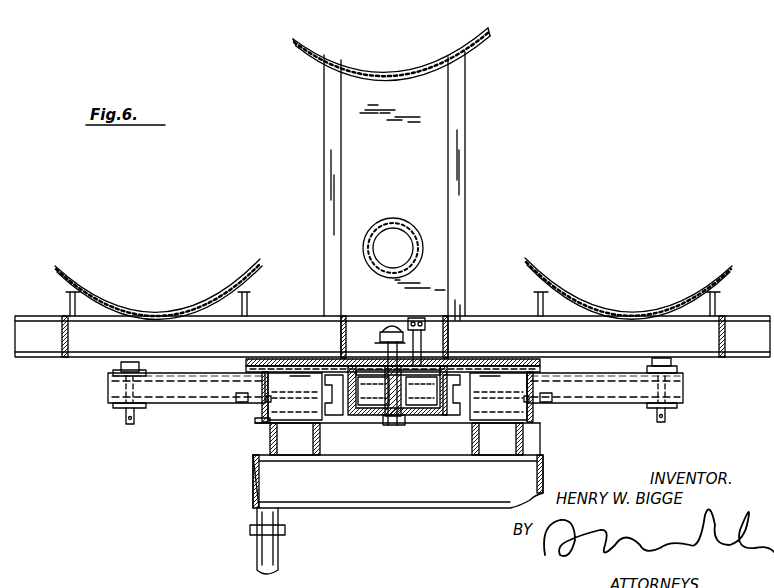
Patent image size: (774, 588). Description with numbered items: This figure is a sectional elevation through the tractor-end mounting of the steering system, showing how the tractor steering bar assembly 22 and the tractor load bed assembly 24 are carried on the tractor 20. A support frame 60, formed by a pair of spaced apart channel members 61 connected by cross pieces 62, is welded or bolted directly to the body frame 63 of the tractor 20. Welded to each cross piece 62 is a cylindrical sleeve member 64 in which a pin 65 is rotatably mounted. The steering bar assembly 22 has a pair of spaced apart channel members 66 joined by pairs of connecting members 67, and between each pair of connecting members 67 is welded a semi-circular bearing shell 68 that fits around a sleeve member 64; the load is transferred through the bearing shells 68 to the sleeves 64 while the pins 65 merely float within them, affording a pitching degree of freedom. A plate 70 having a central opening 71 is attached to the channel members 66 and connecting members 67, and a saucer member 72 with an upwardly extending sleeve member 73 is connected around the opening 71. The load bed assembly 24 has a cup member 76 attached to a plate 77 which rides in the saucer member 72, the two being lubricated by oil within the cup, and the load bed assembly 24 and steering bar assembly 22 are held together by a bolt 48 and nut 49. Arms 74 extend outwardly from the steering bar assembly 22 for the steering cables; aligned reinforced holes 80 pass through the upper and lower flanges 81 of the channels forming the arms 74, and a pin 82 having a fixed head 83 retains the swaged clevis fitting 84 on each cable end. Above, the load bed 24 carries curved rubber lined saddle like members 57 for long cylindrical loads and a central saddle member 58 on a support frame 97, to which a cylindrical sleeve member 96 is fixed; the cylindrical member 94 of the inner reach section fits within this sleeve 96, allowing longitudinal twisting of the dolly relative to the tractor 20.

The tractor 20 is at (243, 466).
The tractor steering bar assembly 22 is at (98, 391).
The tractor load bed assembly 24 is at (48, 308).
The bolt 48 is at (397, 428).
The nut 49 is at (392, 328).
The saddle like members 57 is at (82, 290).
The central saddle member 58 is at (486, 36).
The support frame 60 is at (245, 442).
The channel members 61 is at (543, 437).
The cross pieces 62 is at (322, 438).
The body frame 63 is at (253, 488).
The cylindrical sleeve member 64 is at (262, 418).
The pin 65 is at (260, 398).
The channel members 66 is at (395, 385).
The connecting members 67 is at (262, 385).
The bearing shell 68 is at (397, 396).
The plate 70 is at (246, 364).
The central opening 71 is at (360, 358).
The saucer member 72 is at (375, 420).
The sleeve member 73 is at (373, 391).
The arms 74 is at (178, 390).
The cup member 76 is at (421, 391).
The plate 77 is at (545, 369).
The reinforced holes 80 is at (113, 406).
The flanges 81 is at (143, 379).
The pin 82 is at (137, 413).
The fixed head 83 is at (120, 367).
The swaged clevis fitting 84 is at (146, 372).
The cylindrical member 94 is at (409, 252).
The cylindrical sleeve member 96 is at (396, 219).
The support frame 97 is at (458, 130).